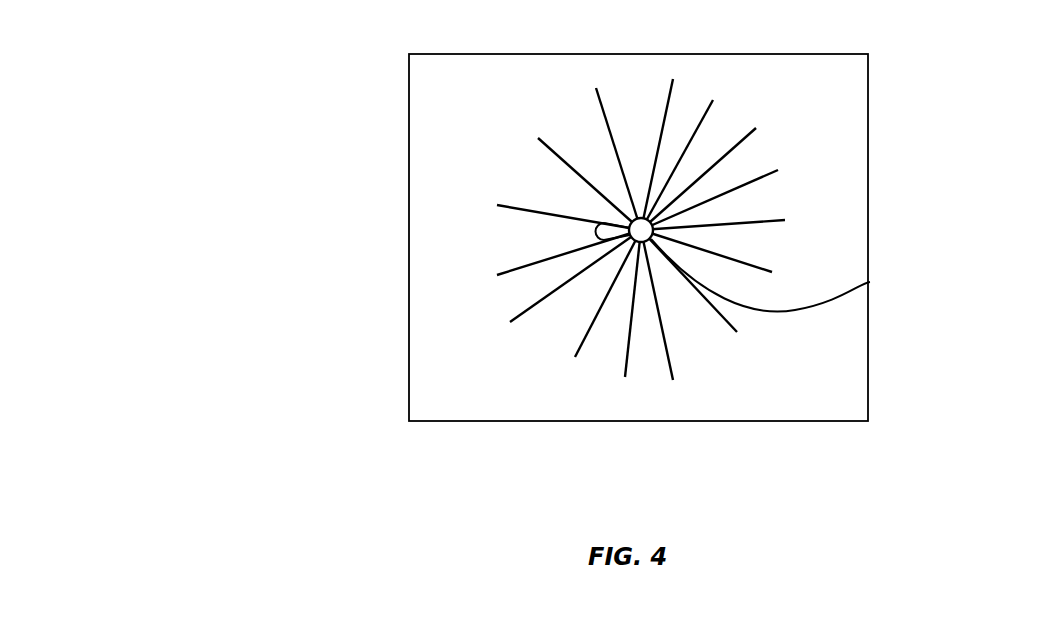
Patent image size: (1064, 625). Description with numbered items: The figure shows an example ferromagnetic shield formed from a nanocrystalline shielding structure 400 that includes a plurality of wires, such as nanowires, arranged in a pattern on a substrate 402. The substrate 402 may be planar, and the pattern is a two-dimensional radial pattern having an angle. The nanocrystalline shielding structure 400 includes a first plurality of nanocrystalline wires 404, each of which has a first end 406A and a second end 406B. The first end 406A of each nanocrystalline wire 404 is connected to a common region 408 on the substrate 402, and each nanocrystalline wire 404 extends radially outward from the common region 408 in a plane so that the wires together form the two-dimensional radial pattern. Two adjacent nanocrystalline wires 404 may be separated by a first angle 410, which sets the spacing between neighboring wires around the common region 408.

The nanocrystalline shielding structure 400 is at (290, 143).
The substrate 402 is at (409, 355).
The nanocrystalline wire 404 is at (547, 151).
The first end 406A is at (868, 283).
The second end 406B is at (772, 272).
The common region 408 is at (756, 128).
The first angle 410 is at (595, 232).